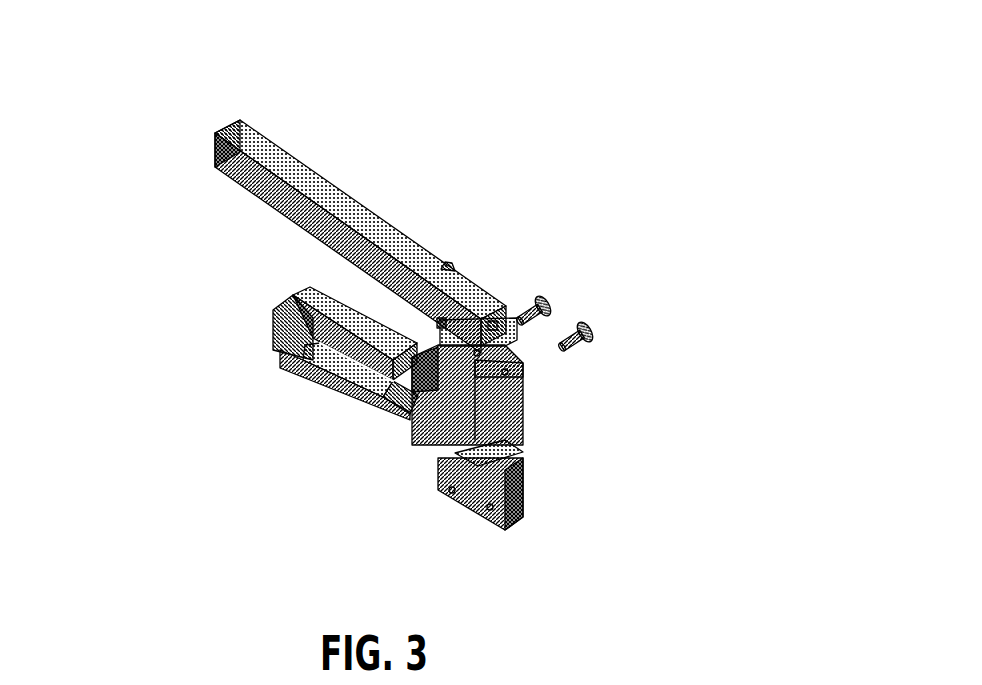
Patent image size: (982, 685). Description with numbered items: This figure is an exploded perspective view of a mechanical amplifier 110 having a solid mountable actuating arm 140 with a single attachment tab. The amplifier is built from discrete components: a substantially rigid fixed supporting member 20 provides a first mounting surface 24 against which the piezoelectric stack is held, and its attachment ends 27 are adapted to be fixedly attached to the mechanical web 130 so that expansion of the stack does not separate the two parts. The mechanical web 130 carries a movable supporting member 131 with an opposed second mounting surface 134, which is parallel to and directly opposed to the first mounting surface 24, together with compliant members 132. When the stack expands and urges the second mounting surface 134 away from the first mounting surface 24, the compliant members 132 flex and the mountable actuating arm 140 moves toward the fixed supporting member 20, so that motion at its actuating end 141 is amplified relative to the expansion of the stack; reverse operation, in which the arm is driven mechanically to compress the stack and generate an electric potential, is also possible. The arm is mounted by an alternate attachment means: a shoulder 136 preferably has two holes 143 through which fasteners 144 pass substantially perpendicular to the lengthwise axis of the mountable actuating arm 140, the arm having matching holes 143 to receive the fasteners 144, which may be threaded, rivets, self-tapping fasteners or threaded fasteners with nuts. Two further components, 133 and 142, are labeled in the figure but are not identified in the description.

The mechanical amplifier 110 is at (533, 95).
The mountable actuating arm 140 is at (350, 197).
The actuating end 141 is at (215, 157).
The mounting block 142 is at (488, 333).
The holes 143 is at (492, 325).
The fasteners 144 is at (550, 302).
The fixed supporting member 20 is at (275, 320).
The first mounting surface 24 is at (305, 336).
The attachment ends 27 is at (423, 338).
The mechanical web 130 is at (506, 458).
The movable supporting member 131 is at (430, 462).
The compliant members 132 is at (487, 447).
The pins 133 is at (477, 353).
The second mounting surface 134 is at (408, 425).
The shoulder 136 is at (523, 402).